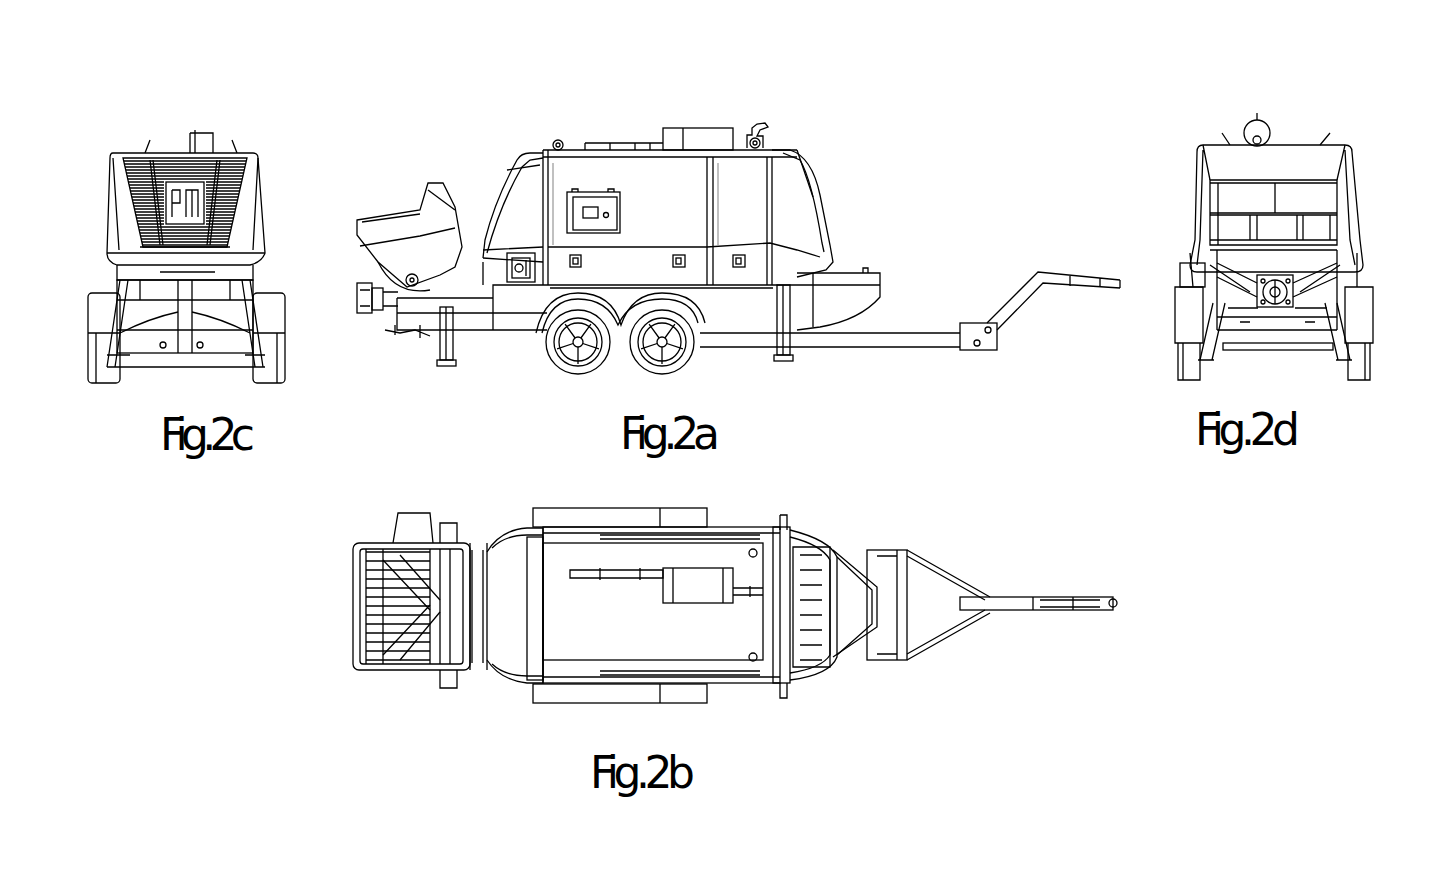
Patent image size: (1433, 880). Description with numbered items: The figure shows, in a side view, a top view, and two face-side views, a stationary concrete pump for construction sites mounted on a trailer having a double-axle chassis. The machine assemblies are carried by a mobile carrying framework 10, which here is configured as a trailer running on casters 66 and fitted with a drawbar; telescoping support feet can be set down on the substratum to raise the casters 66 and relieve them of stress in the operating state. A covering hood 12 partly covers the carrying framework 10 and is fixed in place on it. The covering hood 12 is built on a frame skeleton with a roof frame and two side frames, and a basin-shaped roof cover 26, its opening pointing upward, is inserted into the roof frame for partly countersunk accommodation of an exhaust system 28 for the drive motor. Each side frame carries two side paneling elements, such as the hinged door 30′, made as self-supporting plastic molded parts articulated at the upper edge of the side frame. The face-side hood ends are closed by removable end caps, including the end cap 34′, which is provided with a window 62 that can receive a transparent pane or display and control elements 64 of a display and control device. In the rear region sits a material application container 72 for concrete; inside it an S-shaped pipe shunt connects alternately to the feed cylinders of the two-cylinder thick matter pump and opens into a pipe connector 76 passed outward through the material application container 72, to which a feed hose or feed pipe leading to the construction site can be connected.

In FIG. 2A, the carrying framework 10 is at (730, 313).
In FIG. 2C, the carrying framework 10 is at (208, 320).
In FIG. 2B, the carrying framework 10 is at (880, 547).
In FIG. 2A, the covering hood 12 is at (592, 160).
In FIG. 2B, the roof cover 26 is at (742, 573).
In FIG. 2A, the exhaust system 28 is at (697, 137).
In FIG. 2D, the exhaust system 28 is at (1257, 118).
In FIG. 2B, the exhaust system 28 is at (708, 560).
In FIG. 2A, the side paneling element 30′ is at (652, 185).
In FIG. 2A, the end cap 34′ is at (523, 220).
In FIG. 2D, the end cap 34′ is at (1315, 198).
In FIG. 2B, the end cap 34′ is at (503, 570).
In FIG. 2A, the window 62 is at (520, 273).
In FIG. 2A, the display and control elements 64 is at (520, 273).
In FIG. 2A, the casters 66 is at (643, 368).
In FIG. 2D, the casters 66 is at (1190, 363).
In FIG. 2A, the material application container 72 is at (407, 253).
In FIG. 2B, the material application container 72 is at (380, 560).
In FIG. 2A, the pipe connector 76 is at (362, 292).
In FIG. 2D, the pipe connector 76 is at (1313, 347).